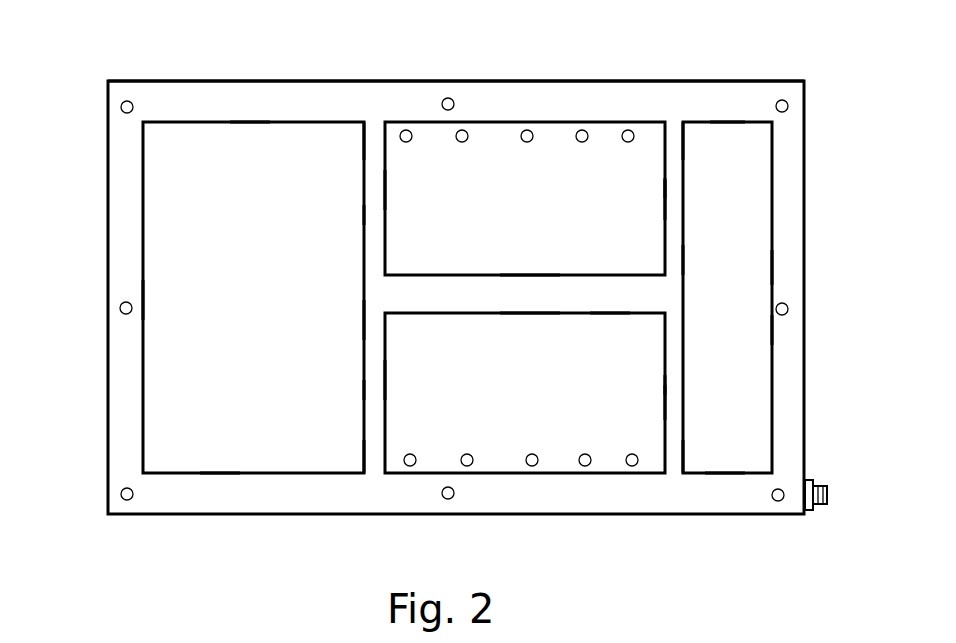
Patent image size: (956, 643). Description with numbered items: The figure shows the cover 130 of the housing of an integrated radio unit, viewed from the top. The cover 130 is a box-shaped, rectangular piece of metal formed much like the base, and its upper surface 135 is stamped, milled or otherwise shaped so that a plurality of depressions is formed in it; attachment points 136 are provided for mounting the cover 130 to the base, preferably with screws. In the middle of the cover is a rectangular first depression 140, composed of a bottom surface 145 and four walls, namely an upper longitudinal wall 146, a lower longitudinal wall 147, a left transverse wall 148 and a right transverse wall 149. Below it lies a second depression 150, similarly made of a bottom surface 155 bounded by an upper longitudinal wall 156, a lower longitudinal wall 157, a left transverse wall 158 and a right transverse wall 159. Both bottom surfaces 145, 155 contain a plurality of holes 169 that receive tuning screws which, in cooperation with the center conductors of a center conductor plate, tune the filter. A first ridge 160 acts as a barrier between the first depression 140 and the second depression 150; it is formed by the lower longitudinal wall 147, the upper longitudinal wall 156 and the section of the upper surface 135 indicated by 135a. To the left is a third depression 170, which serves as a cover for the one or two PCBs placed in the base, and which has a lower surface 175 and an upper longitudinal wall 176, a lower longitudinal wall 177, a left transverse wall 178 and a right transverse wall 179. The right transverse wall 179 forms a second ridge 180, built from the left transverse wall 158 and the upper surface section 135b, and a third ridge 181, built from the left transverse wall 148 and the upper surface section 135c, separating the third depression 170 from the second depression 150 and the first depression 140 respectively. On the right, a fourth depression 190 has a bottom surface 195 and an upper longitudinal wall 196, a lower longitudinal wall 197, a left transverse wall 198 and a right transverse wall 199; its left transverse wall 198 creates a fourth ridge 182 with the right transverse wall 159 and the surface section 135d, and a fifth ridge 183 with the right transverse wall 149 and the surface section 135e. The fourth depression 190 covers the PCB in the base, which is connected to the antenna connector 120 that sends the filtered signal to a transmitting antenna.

The cover 130 is at (92, 38).
The upper surface 135 is at (476, 100).
The section of the upper surface 135a is at (392, 292).
The section of the upper surface 135b is at (375, 388).
The section of the upper surface 135c is at (375, 215).
The section of the upper surface 135d is at (675, 383).
The section of the upper surface 135e is at (675, 185).
The attachment points 136 is at (128, 100).
The holes 169 is at (527, 130).
The first depression 140 is at (604, 150).
The bottom surface 145 is at (540, 211).
The upper longitudinal wall 146 is at (548, 140).
The lower longitudinal wall 147 is at (525, 276).
The left transverse wall 148 is at (387, 188).
The right transverse wall 149 is at (665, 196).
The second depression 150 is at (555, 445).
The bottom surface 155 is at (535, 403).
The upper longitudinal wall 156 is at (525, 318).
The lower longitudinal wall 157 is at (502, 473).
The left transverse wall 158 is at (388, 380).
The right transverse wall 159 is at (665, 400).
The first ridge 160 is at (608, 305).
The third depression 170 is at (270, 460).
The lower surface 175 is at (245, 370).
The upper longitudinal wall 176 is at (247, 123).
The lower longitudinal wall 177 is at (222, 473).
The left transverse wall 178 is at (145, 298).
The right transverse wall 179 is at (362, 319).
The second ridge 180 is at (372, 455).
The third ridge 181 is at (372, 146).
The fourth ridge 182 is at (675, 445).
The fifth ridge 183 is at (672, 140).
The fourth depression 190 is at (737, 212).
The bottom surface 195 is at (765, 266).
The upper longitudinal wall 196 is at (726, 125).
The lower longitudinal wall 197 is at (725, 473).
The left transverse wall 198 is at (688, 260).
The right transverse wall 199 is at (770, 328).
The antenna connector 120 is at (832, 497).